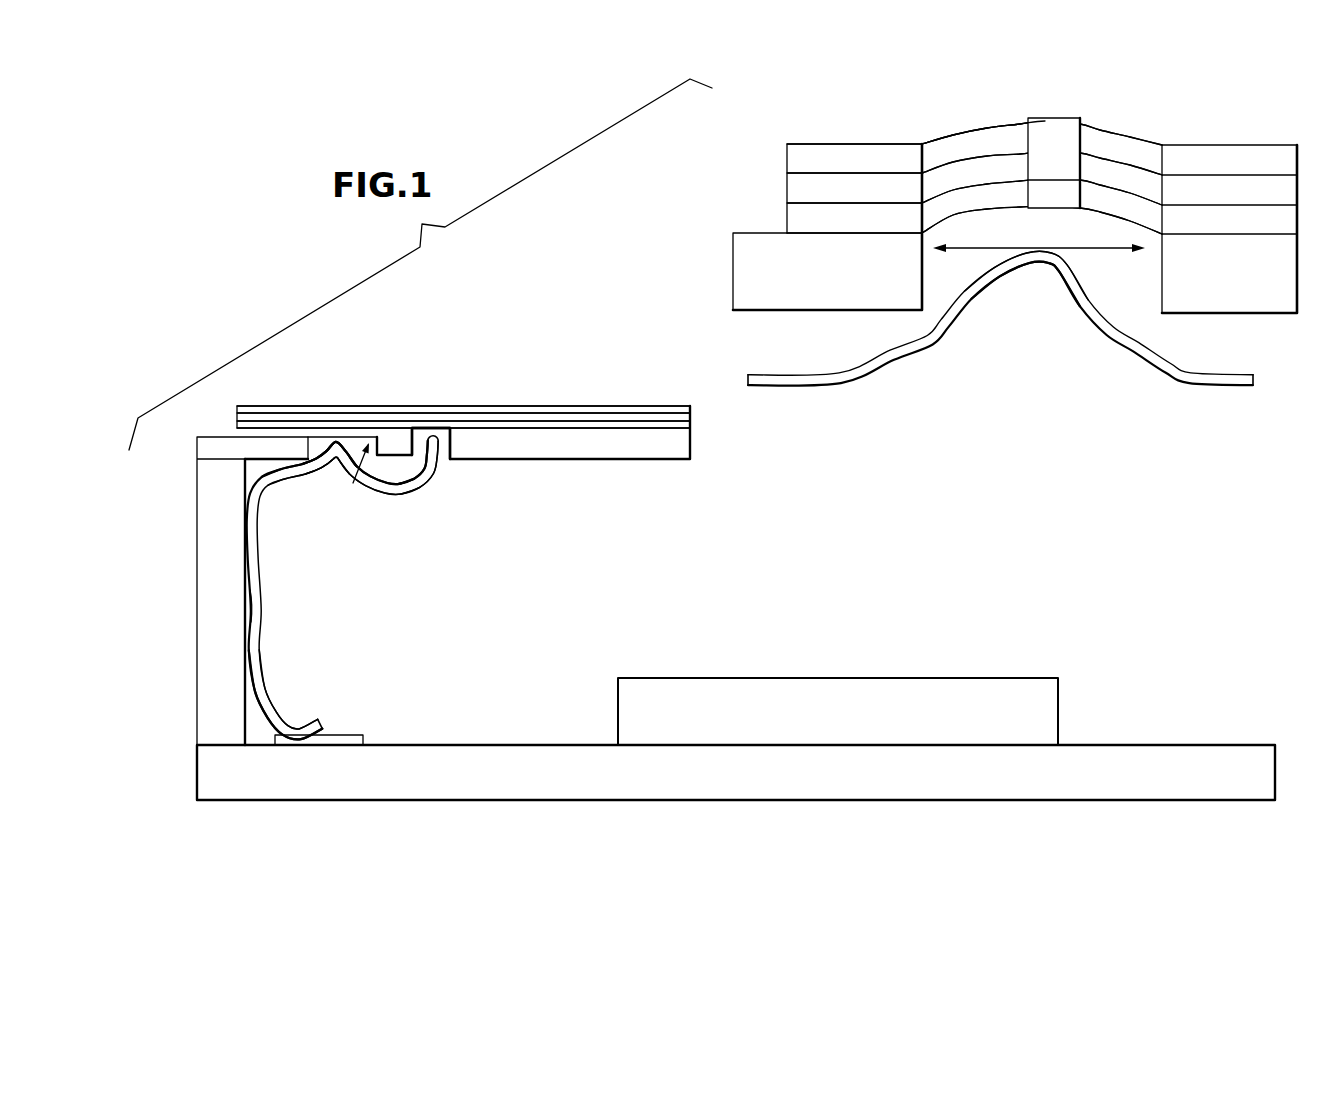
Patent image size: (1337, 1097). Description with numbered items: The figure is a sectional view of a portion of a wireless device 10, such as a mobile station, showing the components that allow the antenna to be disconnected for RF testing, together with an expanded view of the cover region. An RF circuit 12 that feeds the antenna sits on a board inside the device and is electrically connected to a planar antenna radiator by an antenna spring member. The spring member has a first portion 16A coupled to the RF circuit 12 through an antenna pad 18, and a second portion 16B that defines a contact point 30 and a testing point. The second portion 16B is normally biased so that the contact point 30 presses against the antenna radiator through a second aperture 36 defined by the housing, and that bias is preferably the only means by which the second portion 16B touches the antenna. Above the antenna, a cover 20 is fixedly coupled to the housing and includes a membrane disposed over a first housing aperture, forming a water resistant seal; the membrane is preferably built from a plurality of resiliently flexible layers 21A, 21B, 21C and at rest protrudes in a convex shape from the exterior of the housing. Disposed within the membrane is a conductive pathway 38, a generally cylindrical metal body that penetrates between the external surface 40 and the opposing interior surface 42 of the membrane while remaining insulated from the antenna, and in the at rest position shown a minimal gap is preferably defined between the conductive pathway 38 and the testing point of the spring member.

The wireless device 10 is at (174, 594).
The RF circuit 12 is at (848, 677).
The first portion 16A is at (267, 685).
The second portion 16B is at (399, 506).
The antenna pad 18 is at (366, 733).
The cover 20 is at (1148, 121).
The resiliently flexible layer 21A is at (1107, 142).
The resiliently flexible layer 21B is at (1137, 183).
The resiliently flexible layer 21C is at (1130, 216).
The contact point 30 is at (430, 432).
The second aperture 36 is at (442, 460).
The conductive pathway 38 is at (1054, 124).
The first or external surface 40 is at (1010, 127).
The second or interior surface 42 is at (973, 220).